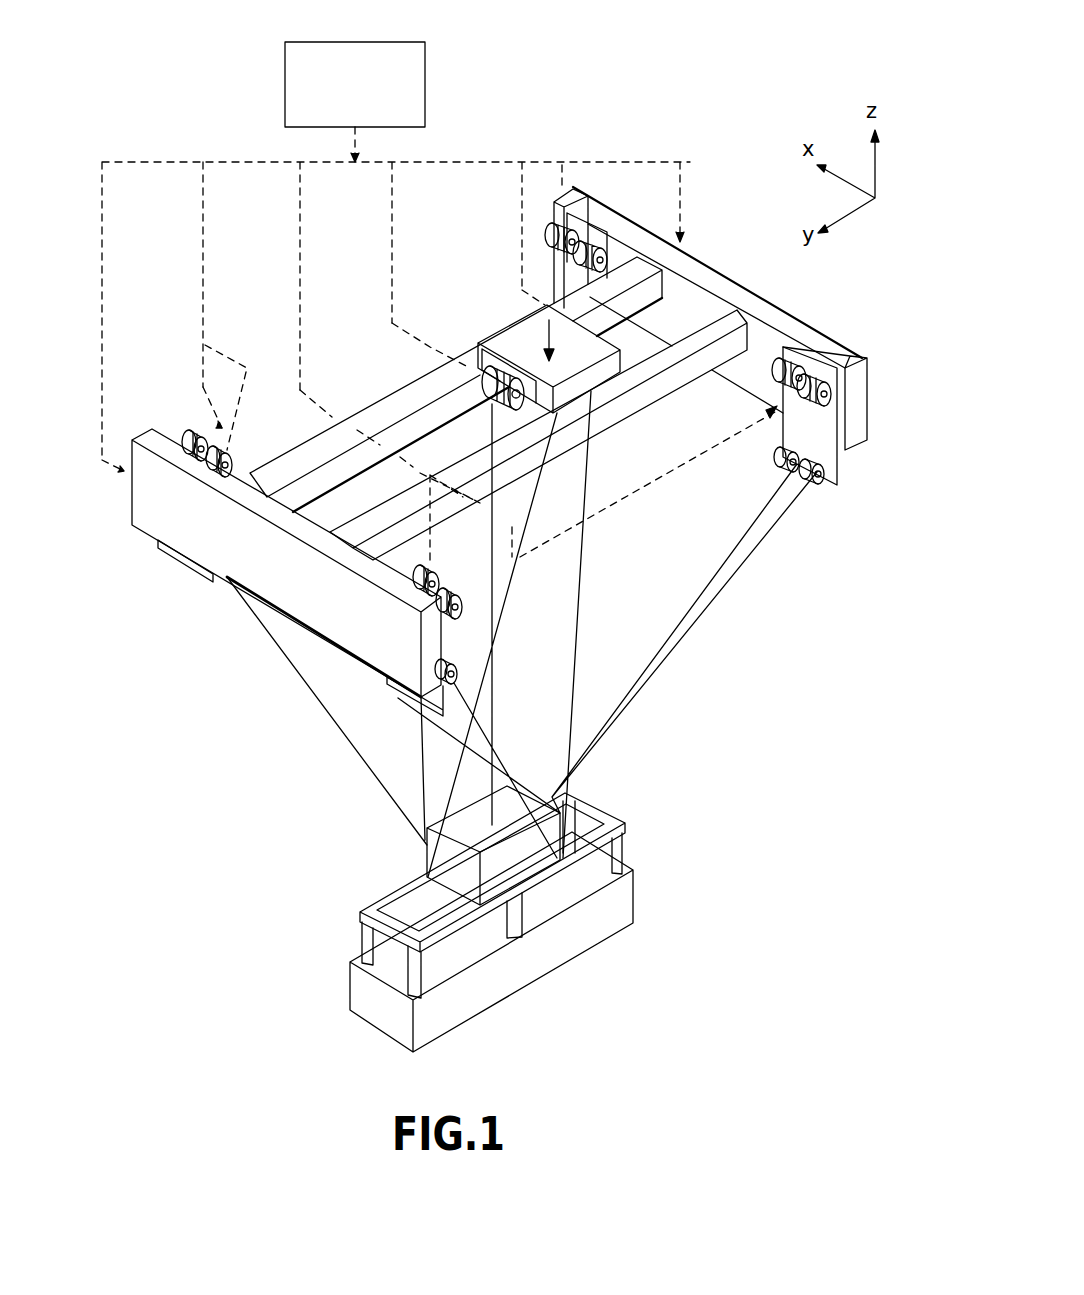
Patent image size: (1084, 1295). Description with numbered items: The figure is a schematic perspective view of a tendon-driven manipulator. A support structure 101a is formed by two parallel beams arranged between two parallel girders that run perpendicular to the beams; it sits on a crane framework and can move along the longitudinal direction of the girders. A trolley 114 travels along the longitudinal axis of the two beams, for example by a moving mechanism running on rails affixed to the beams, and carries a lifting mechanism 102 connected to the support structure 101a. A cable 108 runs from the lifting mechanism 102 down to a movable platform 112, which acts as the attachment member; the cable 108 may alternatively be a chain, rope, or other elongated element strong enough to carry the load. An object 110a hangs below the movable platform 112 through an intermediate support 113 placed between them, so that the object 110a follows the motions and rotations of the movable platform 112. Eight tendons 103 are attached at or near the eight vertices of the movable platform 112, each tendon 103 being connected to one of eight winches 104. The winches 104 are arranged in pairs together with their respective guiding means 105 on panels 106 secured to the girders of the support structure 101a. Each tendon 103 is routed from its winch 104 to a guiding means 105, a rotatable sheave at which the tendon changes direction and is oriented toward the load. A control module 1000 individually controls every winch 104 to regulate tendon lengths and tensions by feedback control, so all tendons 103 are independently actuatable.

The control module 1000 is at (355, 69).
The support structure 101a is at (715, 328).
The lifting mechanism 102 is at (482, 378).
The tendons 103 is at (420, 777).
The winches 104 is at (226, 447).
The guiding means 105 is at (462, 674).
The panel 106 is at (555, 283).
The cable 108 is at (452, 413).
The object 110a is at (607, 905).
The movable platform 112 is at (447, 849).
The intermediate support 113 is at (360, 928).
The trolley 114 is at (510, 332).